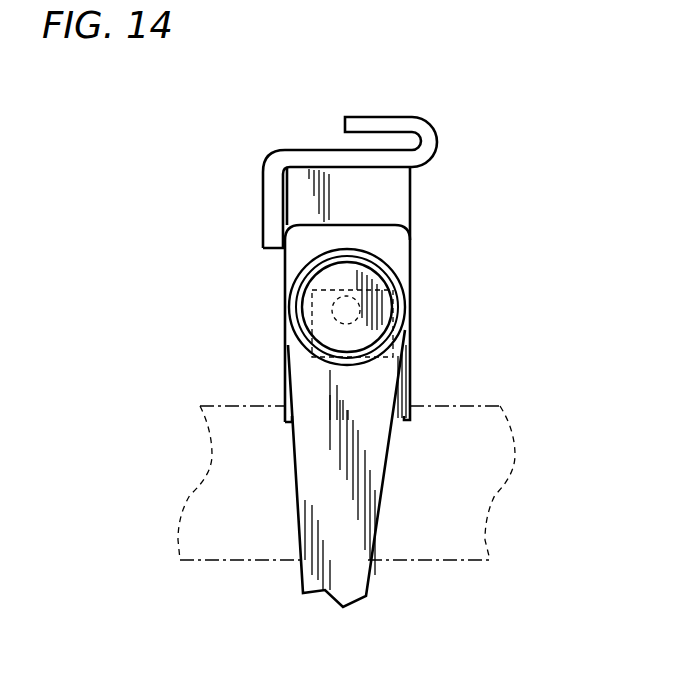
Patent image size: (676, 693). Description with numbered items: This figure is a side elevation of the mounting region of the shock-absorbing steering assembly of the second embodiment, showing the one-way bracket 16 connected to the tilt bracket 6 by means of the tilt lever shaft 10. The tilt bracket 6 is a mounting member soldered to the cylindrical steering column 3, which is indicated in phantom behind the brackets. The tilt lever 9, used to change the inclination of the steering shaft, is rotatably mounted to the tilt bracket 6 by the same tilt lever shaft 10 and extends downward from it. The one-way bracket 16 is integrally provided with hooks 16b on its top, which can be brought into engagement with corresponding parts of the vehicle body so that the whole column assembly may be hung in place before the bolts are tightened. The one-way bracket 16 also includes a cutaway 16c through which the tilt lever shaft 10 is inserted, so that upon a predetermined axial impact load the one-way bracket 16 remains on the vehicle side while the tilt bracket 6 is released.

The one-way bracket 16 is at (303, 150).
The hooks 16b is at (442, 133).
The tilt bracket 6 is at (402, 257).
The cutaway 16c is at (300, 291).
The tilt lever shaft 10 is at (290, 322).
The tilt lever 9 is at (330, 580).
The steering column 3 is at (485, 526).